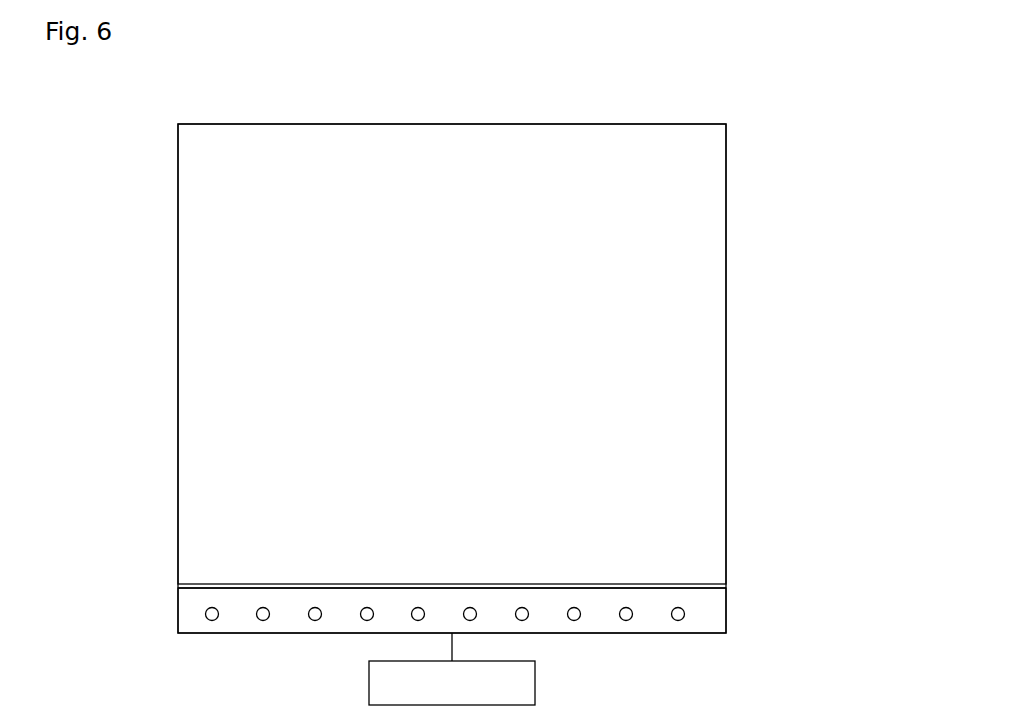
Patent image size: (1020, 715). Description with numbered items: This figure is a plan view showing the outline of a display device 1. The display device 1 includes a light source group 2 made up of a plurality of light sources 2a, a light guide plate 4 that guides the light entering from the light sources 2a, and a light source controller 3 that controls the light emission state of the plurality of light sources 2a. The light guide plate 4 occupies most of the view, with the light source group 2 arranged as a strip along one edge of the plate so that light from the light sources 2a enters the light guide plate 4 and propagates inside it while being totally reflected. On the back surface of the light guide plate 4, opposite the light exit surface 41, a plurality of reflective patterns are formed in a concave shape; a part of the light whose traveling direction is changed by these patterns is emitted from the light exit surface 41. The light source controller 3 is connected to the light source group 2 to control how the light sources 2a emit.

The display device 1 is at (200, 110).
The light guide plate 4 is at (728, 183).
The light exit surface 41 is at (712, 381).
The light source group 2 is at (727, 610).
The light sources 2a is at (626, 622).
The light source controller 3 is at (536, 678).